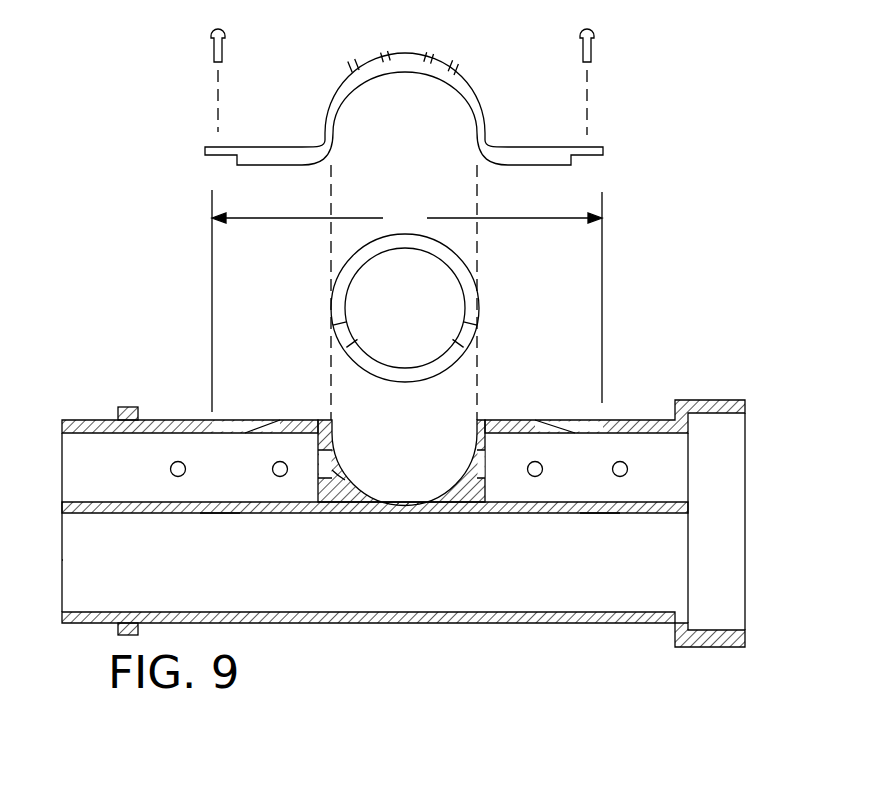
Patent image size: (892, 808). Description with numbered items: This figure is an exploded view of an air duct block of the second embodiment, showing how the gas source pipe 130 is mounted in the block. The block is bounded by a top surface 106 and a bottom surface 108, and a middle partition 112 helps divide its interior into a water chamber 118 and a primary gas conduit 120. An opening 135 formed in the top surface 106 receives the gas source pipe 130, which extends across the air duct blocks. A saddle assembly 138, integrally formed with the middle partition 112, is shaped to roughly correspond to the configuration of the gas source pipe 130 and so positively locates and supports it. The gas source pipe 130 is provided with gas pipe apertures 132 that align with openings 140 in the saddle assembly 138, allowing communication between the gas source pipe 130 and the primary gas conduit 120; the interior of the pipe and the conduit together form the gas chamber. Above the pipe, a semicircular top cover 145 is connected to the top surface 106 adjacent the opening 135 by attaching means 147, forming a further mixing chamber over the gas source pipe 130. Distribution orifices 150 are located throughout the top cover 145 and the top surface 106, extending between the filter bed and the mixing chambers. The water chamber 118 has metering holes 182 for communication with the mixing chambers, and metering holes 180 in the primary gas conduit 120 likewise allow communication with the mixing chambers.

The top surface 106 is at (632, 420).
The bottom surface 108 is at (342, 623).
The middle partition 112 is at (520, 513).
The water chamber 118 is at (452, 583).
The primary gas conduit 120 is at (208, 486).
The gas source pipe 130 is at (470, 285).
The gas pipe apertures 132 is at (348, 345).
The opening 135 is at (407, 301).
The saddle assembly 138 is at (340, 480).
The openings 140 is at (333, 462).
The semicircular top cover 145 is at (302, 135).
The attaching means 147 is at (213, 47).
The distribution orifices 150 is at (163, 420).
The metering holes 180 is at (541, 471).
The metering holes 182 is at (220, 513).